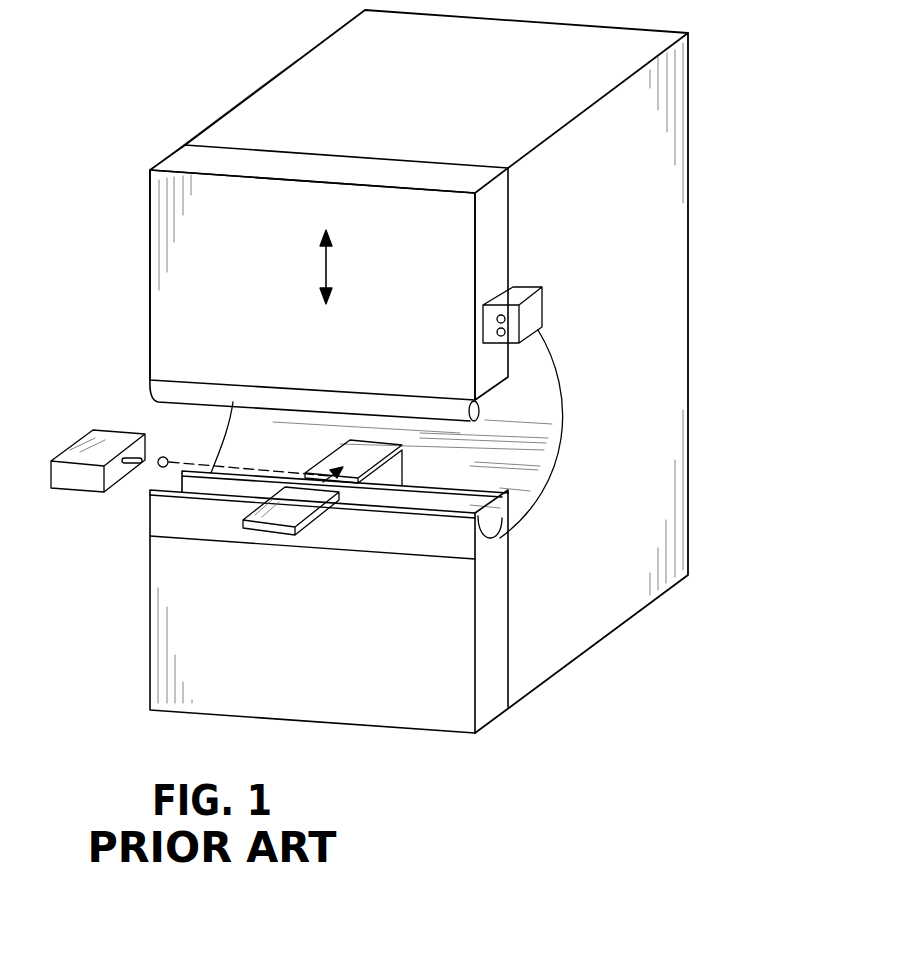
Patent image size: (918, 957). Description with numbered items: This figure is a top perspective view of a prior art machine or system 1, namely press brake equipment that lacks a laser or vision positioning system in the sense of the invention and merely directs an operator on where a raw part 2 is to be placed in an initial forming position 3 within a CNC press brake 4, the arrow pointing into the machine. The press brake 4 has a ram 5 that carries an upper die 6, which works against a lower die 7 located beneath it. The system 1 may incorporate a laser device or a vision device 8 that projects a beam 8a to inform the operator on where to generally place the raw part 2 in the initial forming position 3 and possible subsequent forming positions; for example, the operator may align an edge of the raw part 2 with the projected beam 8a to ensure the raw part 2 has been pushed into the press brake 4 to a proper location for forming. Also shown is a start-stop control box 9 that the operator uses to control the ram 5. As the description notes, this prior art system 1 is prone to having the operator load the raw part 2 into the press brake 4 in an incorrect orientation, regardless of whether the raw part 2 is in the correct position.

The machine or system 1 is at (728, 242).
The raw part 2 is at (272, 530).
The initial forming position 3 is at (388, 459).
The CNC press brake 4 is at (677, 98).
The ram 5 is at (493, 215).
The upper die 6 is at (479, 410).
The lower die 7 is at (460, 538).
The laser device or vision device 8 is at (74, 443).
The beam 8a is at (162, 468).
The start-stop control box 9 is at (542, 307).